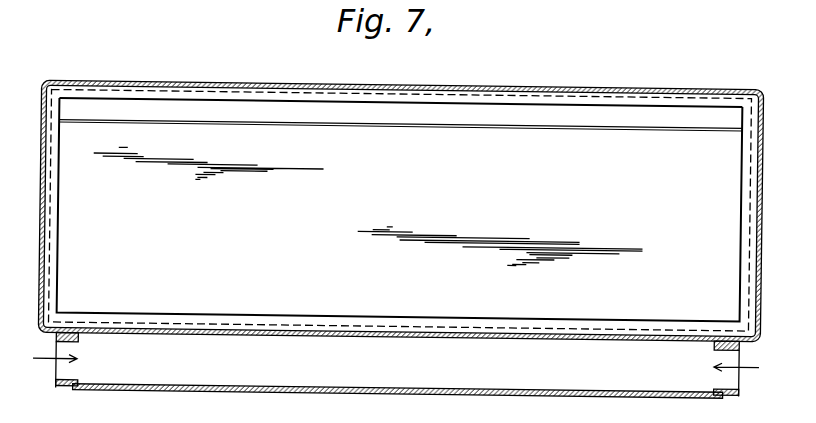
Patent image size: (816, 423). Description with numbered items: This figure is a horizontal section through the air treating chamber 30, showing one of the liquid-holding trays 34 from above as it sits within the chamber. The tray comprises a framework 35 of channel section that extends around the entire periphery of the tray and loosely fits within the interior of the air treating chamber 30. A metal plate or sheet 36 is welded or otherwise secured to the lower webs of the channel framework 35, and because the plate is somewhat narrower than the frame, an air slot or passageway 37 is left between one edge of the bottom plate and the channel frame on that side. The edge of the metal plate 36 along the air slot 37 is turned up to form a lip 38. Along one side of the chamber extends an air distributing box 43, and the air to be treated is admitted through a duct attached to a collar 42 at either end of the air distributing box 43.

The air treating chamber 30 is at (559, 85).
The liquid-holding trays 34 is at (368, 211).
The framework 35 is at (423, 317).
The metal plate 36 is at (302, 136).
The air slot 37 is at (452, 111).
The lip 38 is at (572, 126).
The collar 42 is at (57, 346).
The air distributing box 43 is at (440, 382).